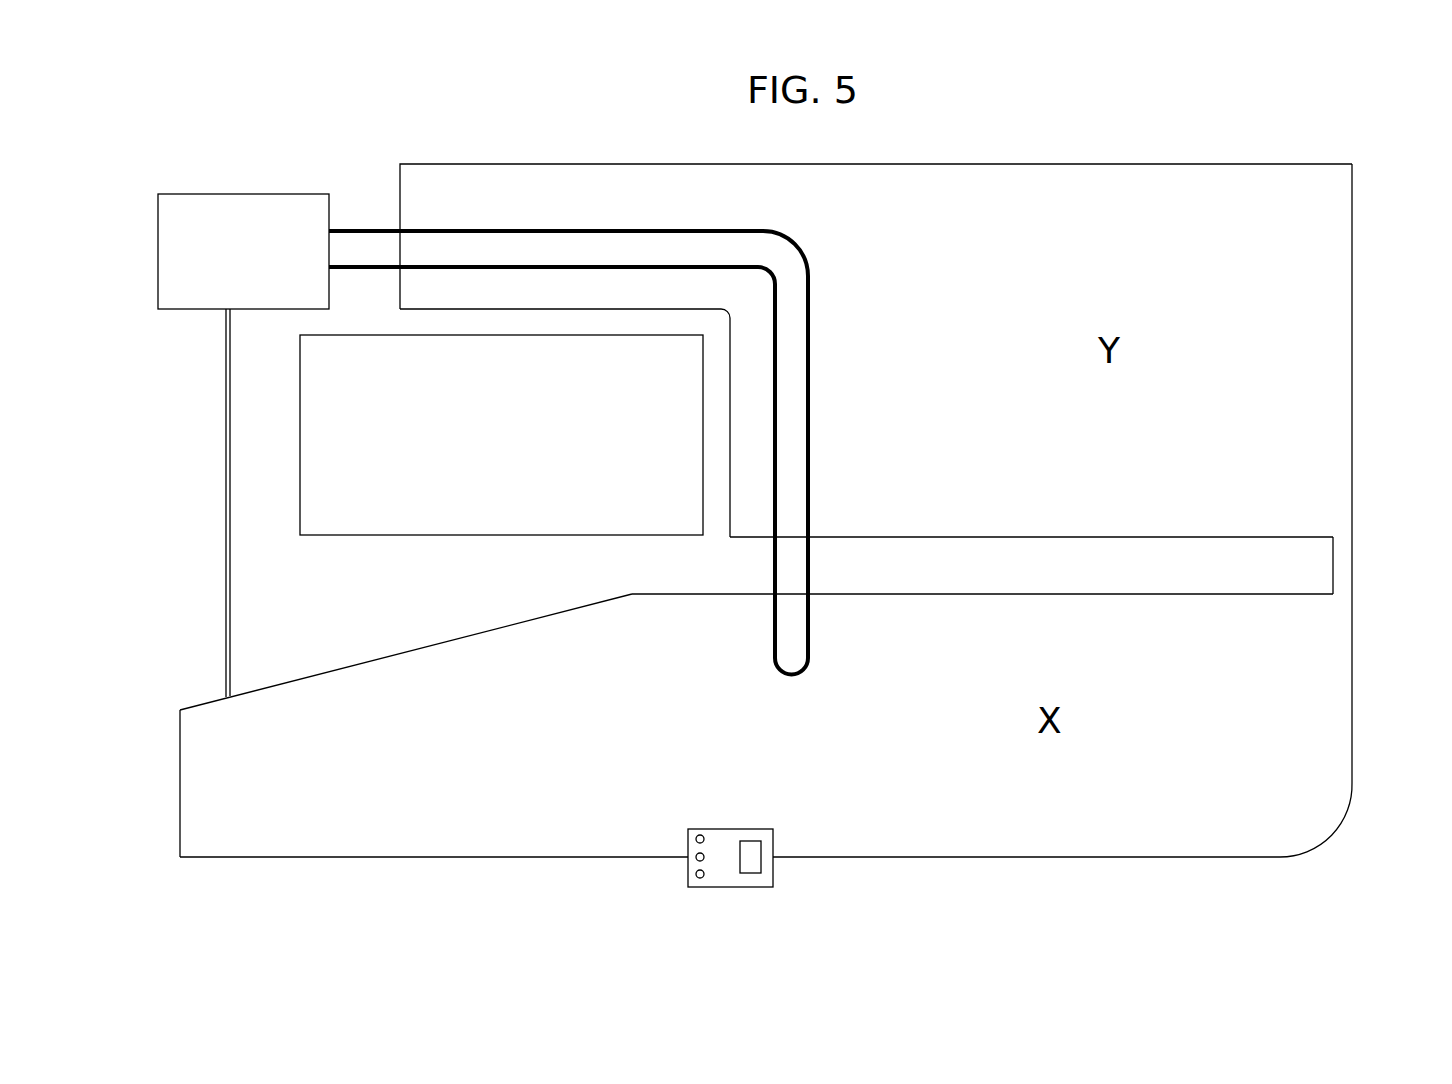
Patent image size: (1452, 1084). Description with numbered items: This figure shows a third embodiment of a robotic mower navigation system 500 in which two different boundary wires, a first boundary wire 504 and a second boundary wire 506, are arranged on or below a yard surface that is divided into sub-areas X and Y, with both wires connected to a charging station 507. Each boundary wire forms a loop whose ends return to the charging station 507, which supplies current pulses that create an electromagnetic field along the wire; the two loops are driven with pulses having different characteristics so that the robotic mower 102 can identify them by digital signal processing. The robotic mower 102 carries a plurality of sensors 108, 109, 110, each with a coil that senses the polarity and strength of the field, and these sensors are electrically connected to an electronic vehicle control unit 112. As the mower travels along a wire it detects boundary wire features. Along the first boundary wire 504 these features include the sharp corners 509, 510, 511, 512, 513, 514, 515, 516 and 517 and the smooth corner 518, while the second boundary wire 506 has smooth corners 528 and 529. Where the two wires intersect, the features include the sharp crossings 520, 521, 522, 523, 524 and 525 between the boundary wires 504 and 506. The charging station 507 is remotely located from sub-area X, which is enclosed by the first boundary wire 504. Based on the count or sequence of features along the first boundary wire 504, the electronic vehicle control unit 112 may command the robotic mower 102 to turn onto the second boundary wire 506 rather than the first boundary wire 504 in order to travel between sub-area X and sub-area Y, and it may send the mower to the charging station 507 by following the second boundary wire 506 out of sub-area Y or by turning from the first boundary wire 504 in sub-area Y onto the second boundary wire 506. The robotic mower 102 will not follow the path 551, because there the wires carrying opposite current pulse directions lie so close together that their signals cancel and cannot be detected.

The robotic mower navigation system 500 is at (1052, 152).
The robotic mower 102 is at (736, 829).
The sensor 108 is at (697, 874).
The sensor 109 is at (697, 857).
The sensor 110 is at (700, 835).
The electronic vehicle control unit 112 is at (755, 841).
The first boundary wire 504 is at (1031, 857).
The second boundary wire 506 is at (810, 372).
The charging station 507 is at (236, 194).
The sharp corner 509 is at (1333, 594).
The sharp corner 510 is at (1333, 537).
The sharp corner 511 is at (730, 537).
The sharp corner 512 is at (738, 309).
The sharp corner 513 is at (400, 309).
The sharp corner 514 is at (400, 164).
The sharp corner 515 is at (1352, 164).
The sharp corner 516 is at (180, 857).
The sharp corner 517 is at (180, 710).
The smooth corner 518 is at (1331, 834).
The sharp crossing 520 is at (810, 537).
The sharp crossing 521 is at (775, 537).
The sharp crossing 522 is at (810, 594).
The sharp crossing 523 is at (775, 594).
The sharp crossing 524 is at (400, 231).
The sharp crossing 525 is at (400, 267).
The smooth corner 528 is at (796, 244).
The smooth corner 529 is at (768, 273).
The path 551 is at (226, 491).